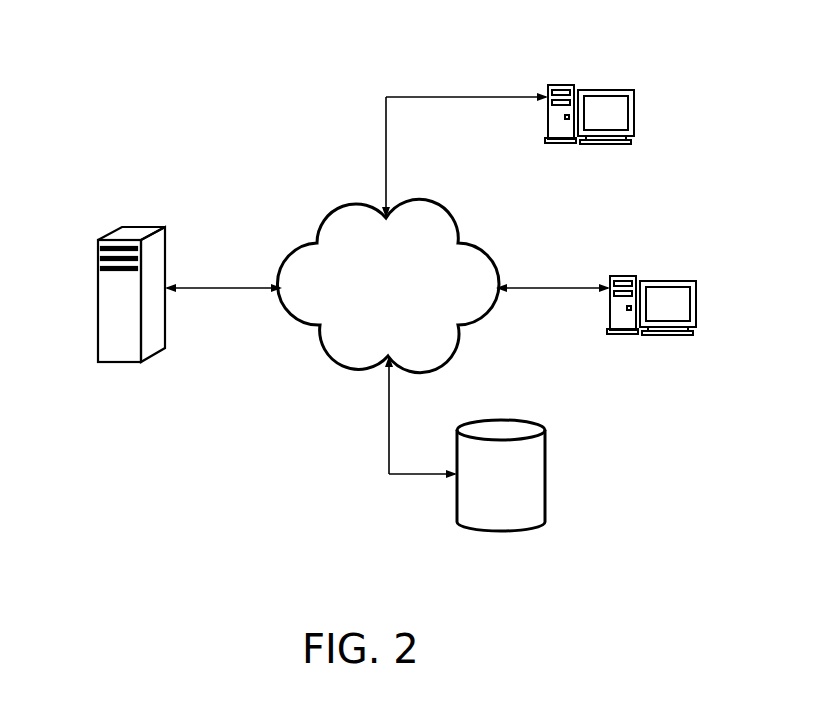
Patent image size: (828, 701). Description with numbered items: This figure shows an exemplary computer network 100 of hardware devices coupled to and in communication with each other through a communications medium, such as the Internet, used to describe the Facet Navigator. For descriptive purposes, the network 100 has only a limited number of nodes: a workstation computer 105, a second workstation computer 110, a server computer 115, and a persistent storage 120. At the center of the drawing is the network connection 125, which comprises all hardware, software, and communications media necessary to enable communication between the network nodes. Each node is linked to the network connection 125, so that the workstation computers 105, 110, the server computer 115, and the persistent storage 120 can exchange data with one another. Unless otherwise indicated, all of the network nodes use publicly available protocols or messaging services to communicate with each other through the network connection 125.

The network 100 is at (278, 172).
The workstation computer 105 is at (608, 90).
The workstation computer 110 is at (671, 280).
The server computer 115 is at (98, 265).
The persistent storage 120 is at (546, 467).
The network connection 125 is at (408, 304).